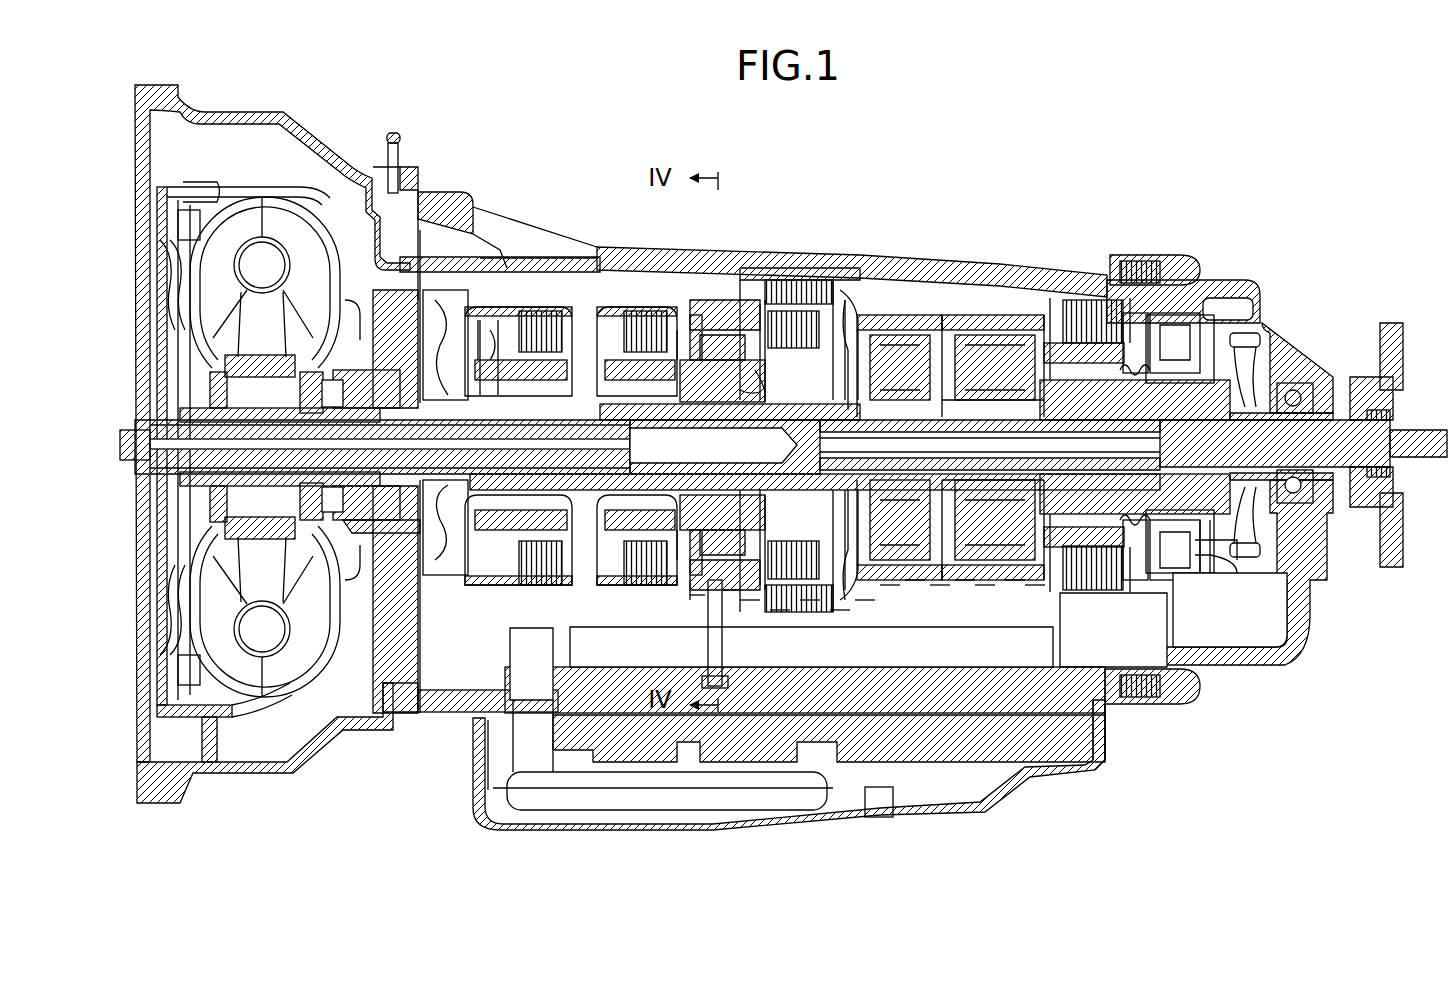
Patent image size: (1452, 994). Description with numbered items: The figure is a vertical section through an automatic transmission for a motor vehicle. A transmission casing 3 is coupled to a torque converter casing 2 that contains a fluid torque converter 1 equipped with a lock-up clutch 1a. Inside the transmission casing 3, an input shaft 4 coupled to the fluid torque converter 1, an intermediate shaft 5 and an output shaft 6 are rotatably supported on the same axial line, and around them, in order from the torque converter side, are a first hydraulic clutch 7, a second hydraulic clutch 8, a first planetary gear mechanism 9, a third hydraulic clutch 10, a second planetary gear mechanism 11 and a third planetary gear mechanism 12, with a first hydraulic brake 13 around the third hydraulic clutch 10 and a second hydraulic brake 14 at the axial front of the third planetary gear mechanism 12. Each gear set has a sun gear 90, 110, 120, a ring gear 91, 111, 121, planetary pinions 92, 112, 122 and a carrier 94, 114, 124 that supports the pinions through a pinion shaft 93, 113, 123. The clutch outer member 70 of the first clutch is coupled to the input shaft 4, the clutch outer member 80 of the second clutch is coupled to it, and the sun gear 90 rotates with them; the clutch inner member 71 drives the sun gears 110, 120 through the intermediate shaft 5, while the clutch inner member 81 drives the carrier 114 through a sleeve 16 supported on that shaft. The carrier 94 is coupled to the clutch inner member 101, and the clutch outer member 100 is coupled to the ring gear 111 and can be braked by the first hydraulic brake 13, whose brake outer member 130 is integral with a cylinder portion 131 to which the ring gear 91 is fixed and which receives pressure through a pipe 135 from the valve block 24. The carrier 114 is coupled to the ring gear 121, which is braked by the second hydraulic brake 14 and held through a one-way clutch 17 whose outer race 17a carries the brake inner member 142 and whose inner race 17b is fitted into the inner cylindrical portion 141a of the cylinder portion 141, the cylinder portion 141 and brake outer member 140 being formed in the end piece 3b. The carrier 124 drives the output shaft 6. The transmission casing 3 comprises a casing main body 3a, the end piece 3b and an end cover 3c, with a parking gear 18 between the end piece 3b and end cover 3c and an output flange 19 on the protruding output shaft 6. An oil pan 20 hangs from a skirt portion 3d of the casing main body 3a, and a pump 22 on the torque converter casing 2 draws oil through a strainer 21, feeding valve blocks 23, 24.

The fluid torque converter 1 is at (298, 192).
The lock-up clutch 1a is at (165, 268).
The torque converter casing 2 is at (246, 114).
The transmission casing 3 is at (606, 228).
The casing main body 3a is at (578, 248).
The end piece 3b is at (1190, 282).
The end cover 3c is at (1294, 346).
The skirt portion 3d is at (1066, 772).
The input shaft 4 is at (426, 508).
The intermediate shaft 5 is at (768, 393).
The output shaft 6 is at (1412, 428).
The first hydraulic clutch 7 is at (531, 300).
The second hydraulic clutch 8 is at (650, 300).
The first planetary gear mechanism 9 is at (684, 318).
The third hydraulic clutch 10 is at (850, 305).
The second planetary gear mechanism 11 is at (906, 305).
The third planetary gear mechanism 12 is at (994, 305).
The first hydraulic brake 13 is at (786, 282).
The second hydraulic brake 14 is at (1086, 292).
The sleeve 16 is at (740, 482).
The one-way clutch 17 is at (1060, 345).
The outer race 17a is at (1092, 570).
The inner race 17b is at (1140, 575).
The parking gear 18 is at (1244, 332).
The output flange 19 is at (1392, 322).
The oil pan 20 is at (830, 826).
The strainer 21 is at (570, 812).
The pump 22 is at (395, 505).
The valve block 23 is at (398, 590).
The valve block 24 is at (938, 760).
The clutch outer member 70 is at (530, 616).
The clutch inner member 71 is at (500, 582).
The clutch outer member 80 is at (606, 612).
The clutch inner member 81 is at (645, 535).
The sun gear 90 is at (690, 530).
The ring gear 91 is at (692, 600).
The planetary pinions 92 is at (715, 595).
The pinion shaft 93 is at (688, 582).
The carrier 94 is at (748, 604).
The clutch outer member 100 is at (812, 604).
The clutch inner member 101 is at (792, 540).
The sun gear 110 is at (840, 614).
The ring gear 111 is at (892, 588).
The planetary pinions 112 is at (915, 583).
The pinion shaft 113 is at (865, 603).
The carrier 114 is at (790, 614).
The sun gear 120 is at (940, 588).
The ring gear 121 is at (985, 588).
The planetary pinions 122 is at (1014, 583).
The pinion shaft 123 is at (965, 583).
The carrier 124 is at (1036, 588).
The brake outer member 130 is at (816, 283).
The cylinder portion 131 is at (706, 315).
The pipe 135 is at (738, 700).
The brake outer member 140 is at (1112, 580).
The cylinder portion 141 is at (1240, 556).
The inner cylindrical portion 141a is at (1212, 560).
The brake inner member 142 is at (1158, 580).